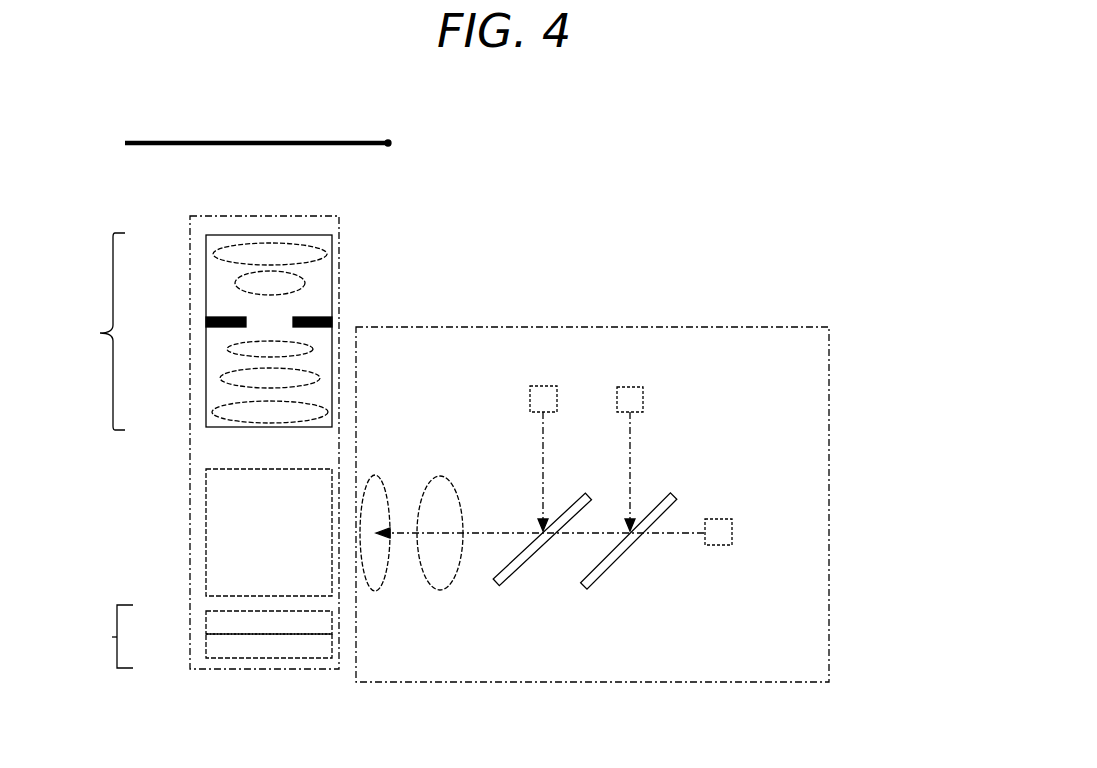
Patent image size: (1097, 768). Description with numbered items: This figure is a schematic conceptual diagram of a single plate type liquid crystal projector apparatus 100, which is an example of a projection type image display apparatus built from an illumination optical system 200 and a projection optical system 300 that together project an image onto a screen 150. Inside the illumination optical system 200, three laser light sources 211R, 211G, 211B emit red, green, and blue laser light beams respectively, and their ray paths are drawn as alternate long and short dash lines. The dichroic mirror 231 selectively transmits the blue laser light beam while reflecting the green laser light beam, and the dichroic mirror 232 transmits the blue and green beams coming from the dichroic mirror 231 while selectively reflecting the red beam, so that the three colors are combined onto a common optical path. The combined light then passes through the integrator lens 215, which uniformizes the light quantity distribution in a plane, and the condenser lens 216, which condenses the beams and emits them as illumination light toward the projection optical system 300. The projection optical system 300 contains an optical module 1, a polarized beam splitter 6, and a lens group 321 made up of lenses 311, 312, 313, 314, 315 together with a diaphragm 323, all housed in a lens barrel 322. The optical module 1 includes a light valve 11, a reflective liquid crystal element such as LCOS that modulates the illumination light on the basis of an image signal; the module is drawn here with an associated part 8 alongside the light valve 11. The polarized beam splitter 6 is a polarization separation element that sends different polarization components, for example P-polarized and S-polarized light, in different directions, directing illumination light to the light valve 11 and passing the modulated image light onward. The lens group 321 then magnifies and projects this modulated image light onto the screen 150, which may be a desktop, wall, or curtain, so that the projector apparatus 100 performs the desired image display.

The single plate type liquid crystal projector apparatus 100 is at (838, 237).
The screen 150 is at (393, 143).
The projection optical system 300 is at (341, 216).
The lens barrel 322 is at (334, 240).
The diaphragm 323 is at (320, 318).
The lens group 321 is at (90, 331).
The lens 315 is at (215, 253).
The lens 314 is at (235, 283).
The lens 313 is at (228, 349).
The lens 312 is at (222, 378).
The lens 311 is at (216, 412).
The polarized beam splitter 6 is at (218, 509).
The optical module 1 is at (112, 637).
The circuit board 8 is at (215, 618).
The light valve 11 is at (215, 648).
The illumination optical system 200 is at (831, 535).
The condenser lens 216 is at (377, 580).
The integrator lens 215 is at (442, 582).
The laser light source 211R is at (557, 398).
The laser light source 211G is at (644, 398).
The laser light source 211B is at (720, 546).
The dichroic mirror 232 is at (560, 512).
The dichroic mirror 231 is at (676, 497).